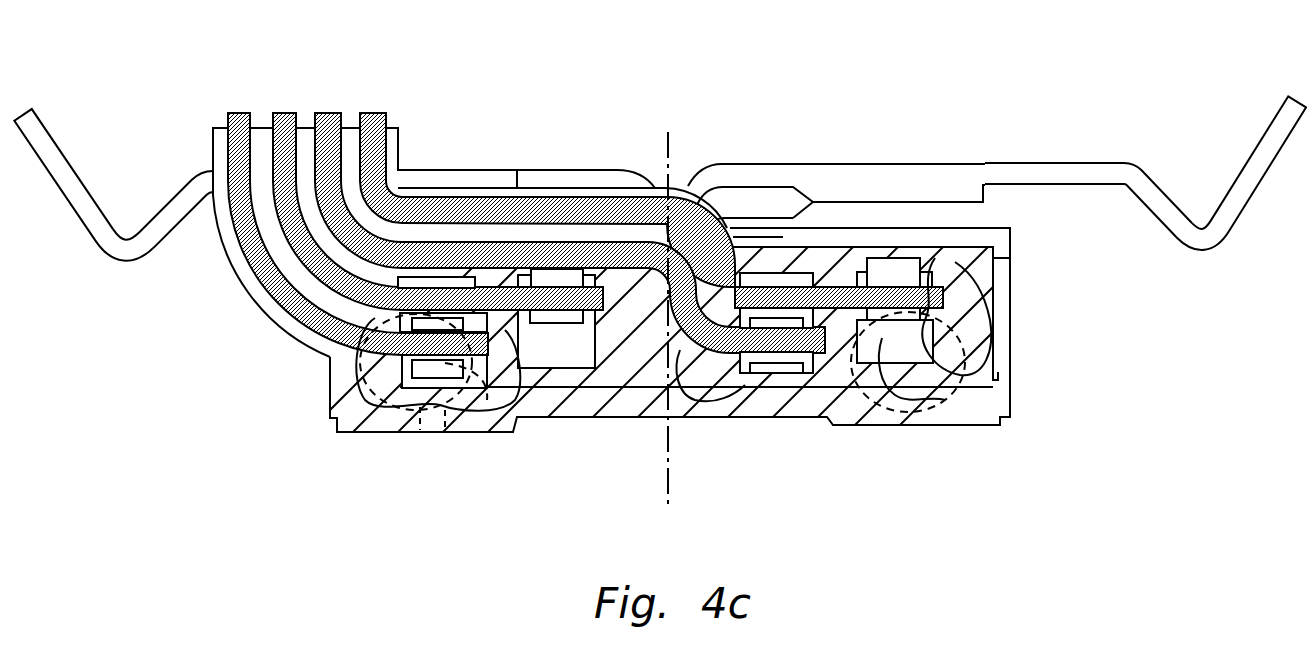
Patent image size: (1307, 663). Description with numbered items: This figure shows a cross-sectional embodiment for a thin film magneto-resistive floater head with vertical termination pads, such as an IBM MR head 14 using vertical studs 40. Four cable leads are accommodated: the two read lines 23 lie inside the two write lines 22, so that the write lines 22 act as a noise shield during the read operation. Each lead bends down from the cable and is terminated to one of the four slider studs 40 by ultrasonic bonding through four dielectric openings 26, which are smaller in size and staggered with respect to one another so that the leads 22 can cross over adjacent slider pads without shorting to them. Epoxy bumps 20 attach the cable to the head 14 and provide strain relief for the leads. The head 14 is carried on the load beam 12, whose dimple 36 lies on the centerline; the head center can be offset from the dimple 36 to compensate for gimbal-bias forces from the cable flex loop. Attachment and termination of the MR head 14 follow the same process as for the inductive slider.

The load beam 12 is at (1060, 163).
The MR head 14 is at (1010, 322).
The epoxy bumps 20 is at (350, 398).
The write lines 22 is at (228, 113).
The read lines 23 is at (284, 113).
The dielectric openings 26 is at (545, 270).
The load beam dimple 36 is at (650, 176).
The vertical studs 40 is at (453, 277).